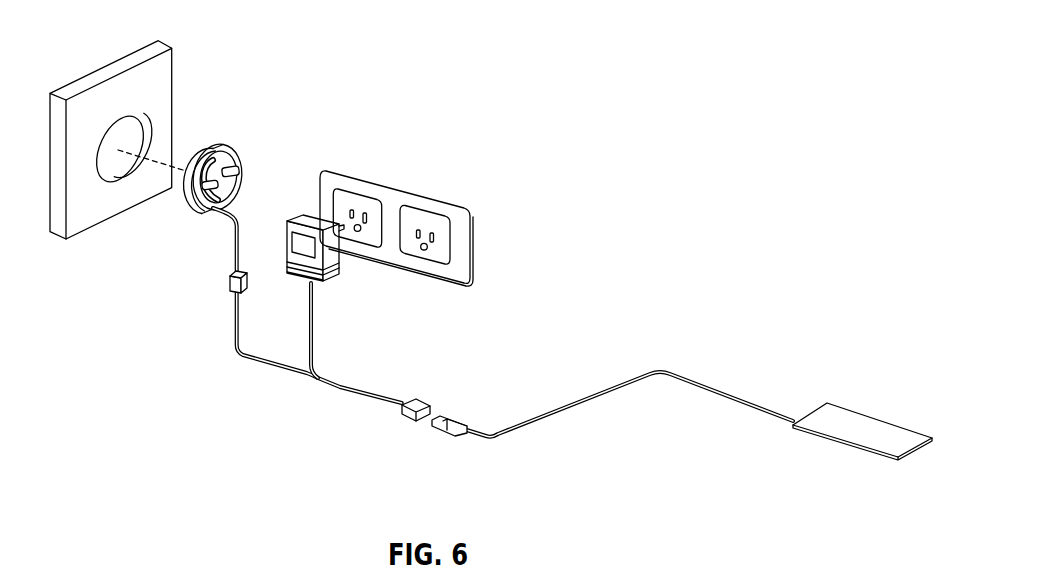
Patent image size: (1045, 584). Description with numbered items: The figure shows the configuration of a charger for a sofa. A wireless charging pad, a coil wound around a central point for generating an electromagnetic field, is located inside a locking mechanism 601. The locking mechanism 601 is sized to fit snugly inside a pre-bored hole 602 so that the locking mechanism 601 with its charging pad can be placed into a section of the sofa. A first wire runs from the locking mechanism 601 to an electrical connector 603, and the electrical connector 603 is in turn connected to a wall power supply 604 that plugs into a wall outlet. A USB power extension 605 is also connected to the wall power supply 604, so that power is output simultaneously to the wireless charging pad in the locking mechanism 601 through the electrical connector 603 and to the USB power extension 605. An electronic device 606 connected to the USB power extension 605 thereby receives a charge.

The locking mechanism 601 is at (212, 143).
The pre-bored hole 602 is at (120, 120).
The electrical connector 603 is at (228, 280).
The wall power supply 604 is at (303, 213).
The USB power extension 605 is at (418, 402).
The electronic device 606 is at (870, 417).